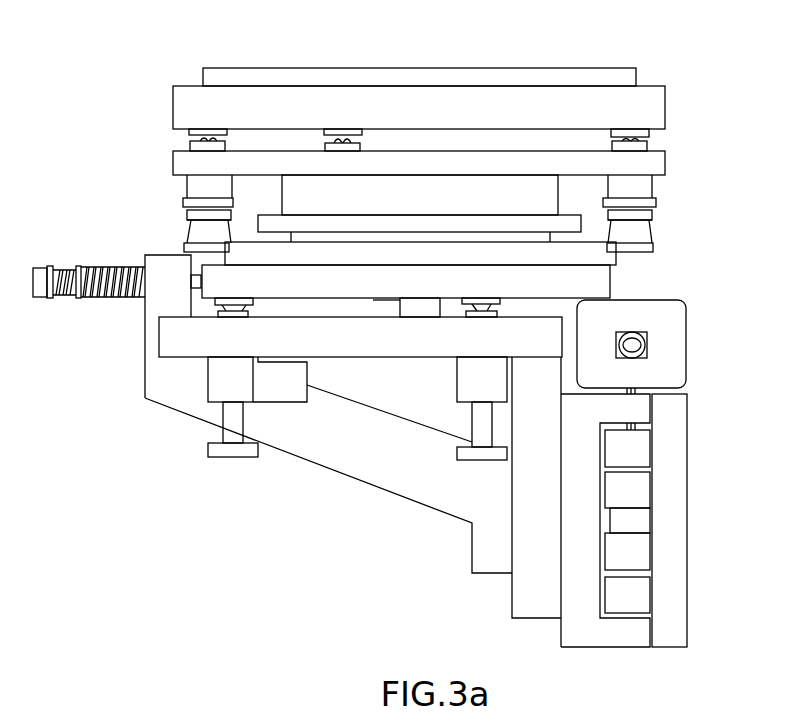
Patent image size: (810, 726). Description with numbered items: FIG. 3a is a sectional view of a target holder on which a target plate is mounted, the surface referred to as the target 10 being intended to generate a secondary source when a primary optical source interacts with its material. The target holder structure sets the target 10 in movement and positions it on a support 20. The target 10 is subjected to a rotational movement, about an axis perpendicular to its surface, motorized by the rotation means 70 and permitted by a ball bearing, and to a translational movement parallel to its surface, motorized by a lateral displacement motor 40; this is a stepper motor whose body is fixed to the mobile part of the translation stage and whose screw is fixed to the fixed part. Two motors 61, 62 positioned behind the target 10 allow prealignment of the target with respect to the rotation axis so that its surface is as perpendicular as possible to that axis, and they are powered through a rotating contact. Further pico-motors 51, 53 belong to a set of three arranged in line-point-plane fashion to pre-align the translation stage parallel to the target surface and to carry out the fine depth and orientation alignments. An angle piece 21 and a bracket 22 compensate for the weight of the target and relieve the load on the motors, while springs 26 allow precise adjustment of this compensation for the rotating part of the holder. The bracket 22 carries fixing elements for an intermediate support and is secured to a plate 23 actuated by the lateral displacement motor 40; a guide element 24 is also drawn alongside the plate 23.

The target 10 is at (430, 80).
The support 20 is at (192, 105).
The rotation means 70 is at (297, 197).
The motor 61 is at (192, 223).
The motor 62 is at (652, 222).
The spring 26 is at (38, 286).
The bracket 22 is at (353, 450).
The motor 51 is at (222, 451).
The motor 53 is at (482, 452).
The angle piece 21 is at (528, 580).
The plate 23 is at (582, 600).
The guide rail 24 is at (672, 520).
The lateral displacement motor 40 is at (668, 348).